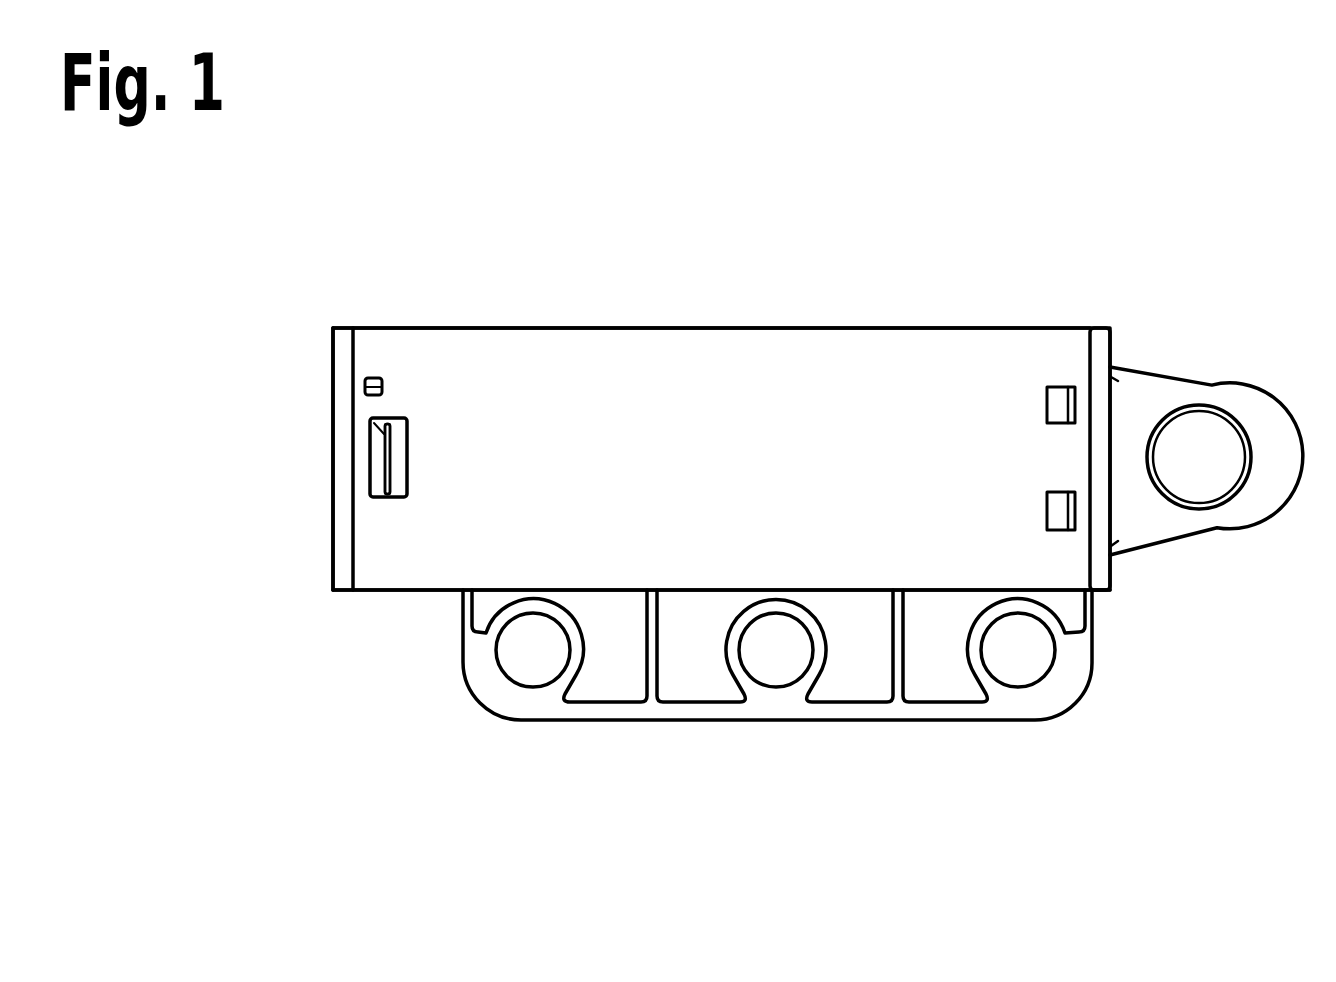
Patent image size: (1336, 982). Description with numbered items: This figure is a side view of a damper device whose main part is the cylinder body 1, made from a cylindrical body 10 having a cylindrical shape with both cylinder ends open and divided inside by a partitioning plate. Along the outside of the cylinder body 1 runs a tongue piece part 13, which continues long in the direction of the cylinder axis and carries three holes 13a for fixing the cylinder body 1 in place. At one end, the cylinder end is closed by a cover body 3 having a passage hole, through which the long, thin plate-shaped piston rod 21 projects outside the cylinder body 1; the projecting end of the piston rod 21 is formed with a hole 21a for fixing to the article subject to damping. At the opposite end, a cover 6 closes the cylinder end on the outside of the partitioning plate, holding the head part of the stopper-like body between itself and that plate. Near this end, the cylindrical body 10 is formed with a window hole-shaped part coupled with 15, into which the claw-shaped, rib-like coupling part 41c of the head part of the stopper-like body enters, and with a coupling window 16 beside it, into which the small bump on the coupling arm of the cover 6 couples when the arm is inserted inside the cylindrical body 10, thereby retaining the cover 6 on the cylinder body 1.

The cylinder body 1 is at (522, 350).
The cylindrical body 10 is at (675, 347).
The cover 6 is at (334, 394).
The cover body 3 is at (1092, 327).
The coupling window 16 is at (375, 375).
The part coupled with 15 is at (400, 417).
The coupling part 41c is at (373, 467).
The piston rod 21 is at (1148, 392).
The hole 21a is at (1220, 445).
The tongue piece part 13 is at (688, 678).
The hole 13a is at (539, 672).